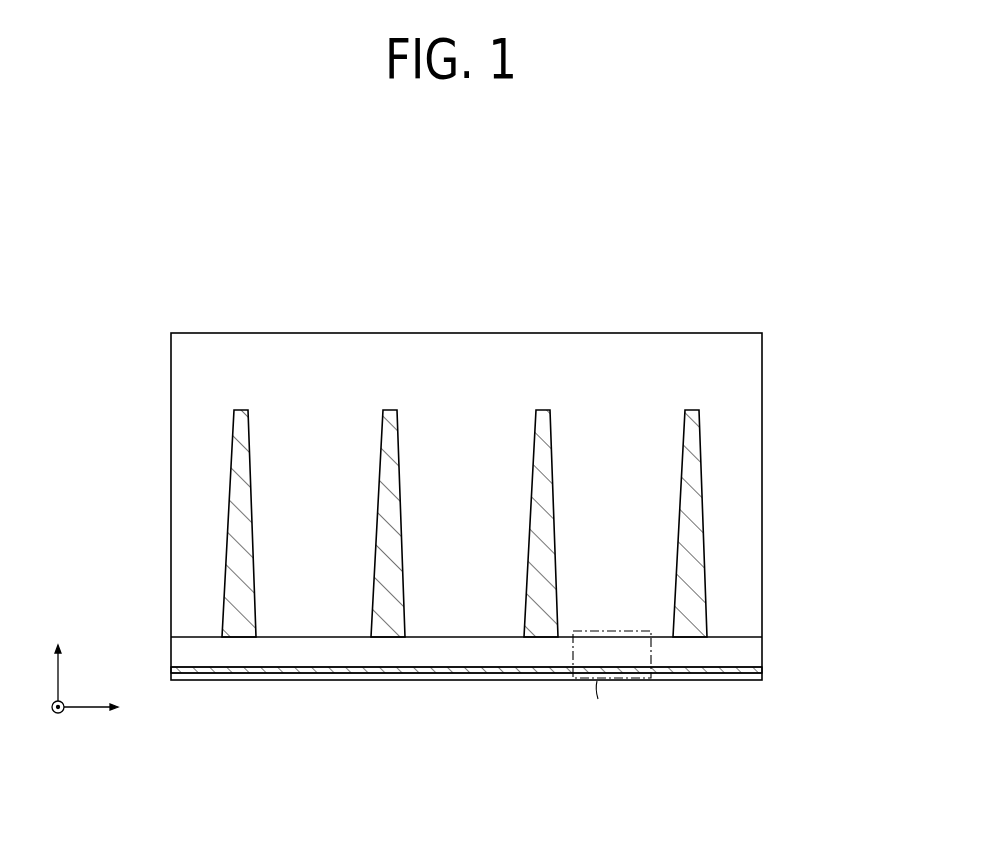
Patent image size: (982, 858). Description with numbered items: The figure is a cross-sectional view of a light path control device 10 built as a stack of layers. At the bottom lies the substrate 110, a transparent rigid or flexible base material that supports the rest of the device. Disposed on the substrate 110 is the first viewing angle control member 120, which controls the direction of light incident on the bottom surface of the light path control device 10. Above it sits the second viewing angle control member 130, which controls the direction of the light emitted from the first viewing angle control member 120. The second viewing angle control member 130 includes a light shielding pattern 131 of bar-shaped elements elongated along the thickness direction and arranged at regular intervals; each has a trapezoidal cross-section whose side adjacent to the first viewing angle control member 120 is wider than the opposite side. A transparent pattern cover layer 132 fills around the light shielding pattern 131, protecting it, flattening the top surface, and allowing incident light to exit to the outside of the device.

The light path control device 10 is at (814, 286).
The substrate 110 is at (760, 677).
The first viewing angle control member 120 is at (758, 652).
The second viewing angle control member 130 is at (547, 510).
The light shielding pattern 131 is at (690, 468).
The pattern cover layer 132 is at (737, 380).